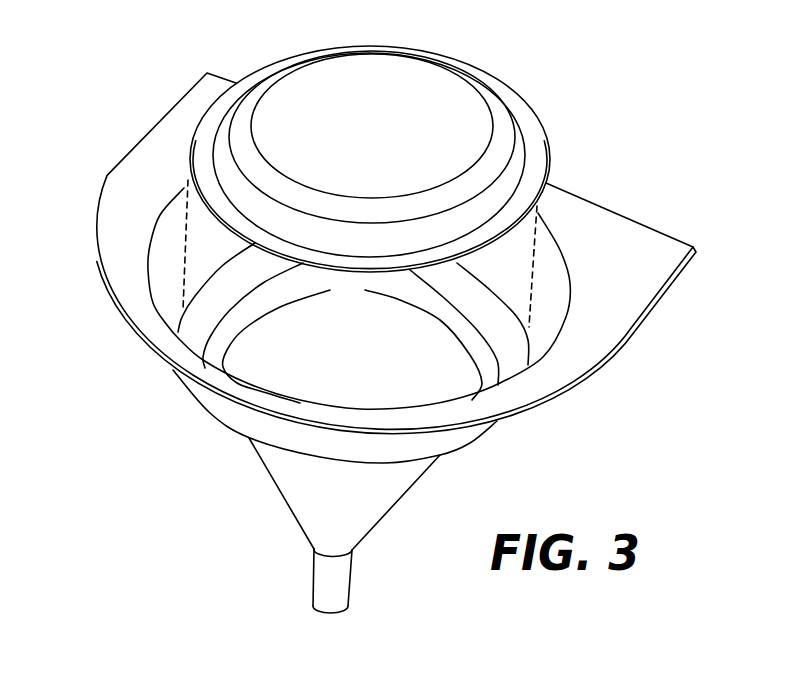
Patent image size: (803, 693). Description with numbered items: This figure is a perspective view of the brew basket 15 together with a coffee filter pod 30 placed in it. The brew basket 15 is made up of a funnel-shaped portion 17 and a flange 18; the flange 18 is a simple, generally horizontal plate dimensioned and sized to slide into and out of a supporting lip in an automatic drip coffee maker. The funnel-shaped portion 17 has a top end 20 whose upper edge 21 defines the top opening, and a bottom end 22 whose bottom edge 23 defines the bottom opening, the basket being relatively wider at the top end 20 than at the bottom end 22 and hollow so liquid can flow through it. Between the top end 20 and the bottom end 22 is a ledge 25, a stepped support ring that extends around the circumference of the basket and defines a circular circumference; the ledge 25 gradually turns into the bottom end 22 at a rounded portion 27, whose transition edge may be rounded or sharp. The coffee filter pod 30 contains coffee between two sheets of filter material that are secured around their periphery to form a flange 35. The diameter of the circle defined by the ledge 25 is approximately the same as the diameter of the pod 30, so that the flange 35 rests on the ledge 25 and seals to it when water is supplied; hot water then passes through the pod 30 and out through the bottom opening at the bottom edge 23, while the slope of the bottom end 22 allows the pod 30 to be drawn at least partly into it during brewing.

The brew basket 15 is at (654, 208).
The funnel-shaped portion 17 is at (205, 414).
The flange 18 is at (613, 327).
The top end 20 is at (172, 268).
The upper edge 21 is at (163, 220).
The bottom end 22 is at (360, 513).
The bottom edge 23 is at (335, 613).
The ledge 25 is at (512, 362).
The rounded portion 27 is at (495, 382).
The coffee filter pod 30 is at (420, 77).
The flange 35 is at (537, 173).